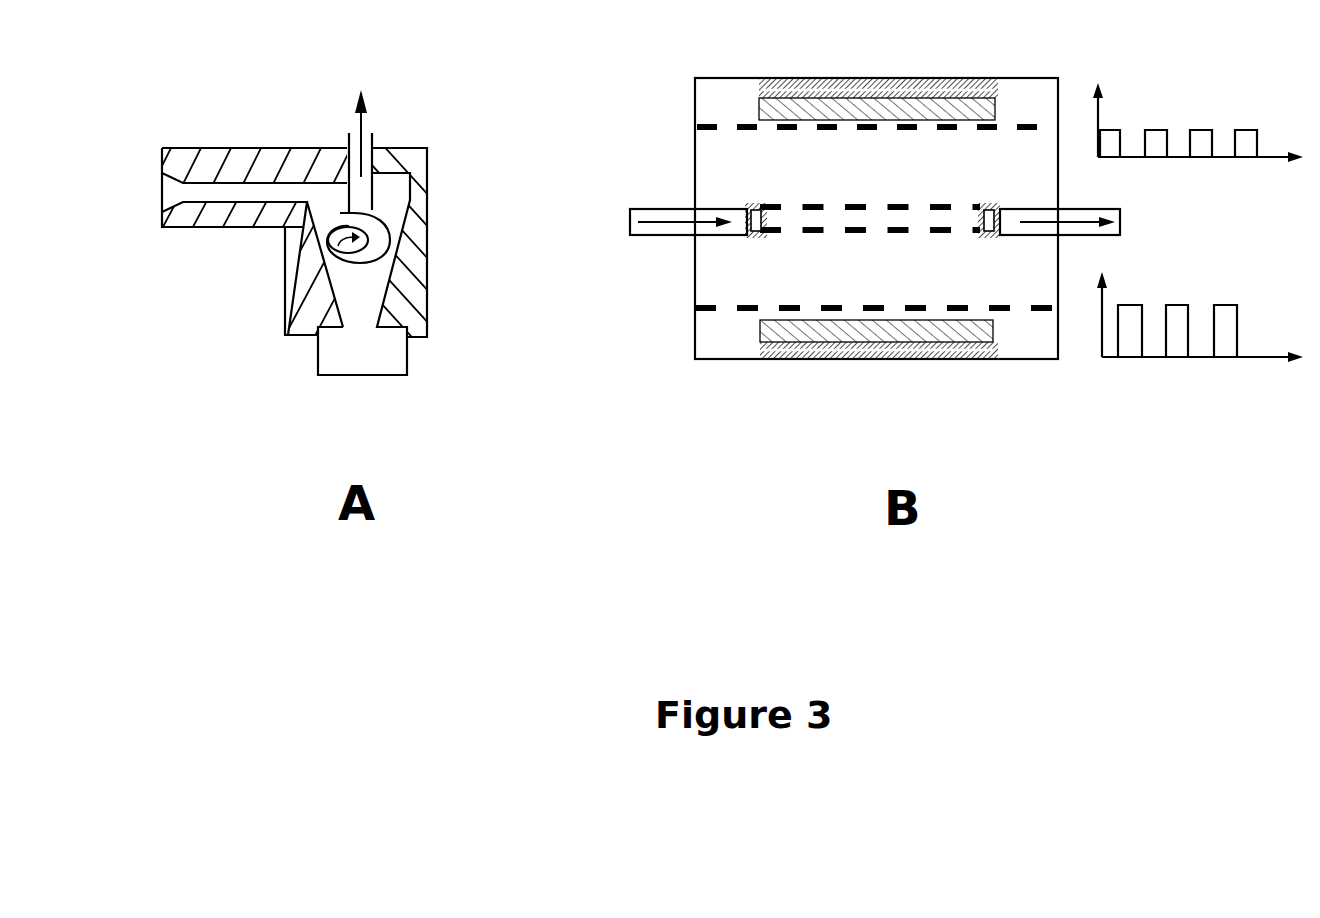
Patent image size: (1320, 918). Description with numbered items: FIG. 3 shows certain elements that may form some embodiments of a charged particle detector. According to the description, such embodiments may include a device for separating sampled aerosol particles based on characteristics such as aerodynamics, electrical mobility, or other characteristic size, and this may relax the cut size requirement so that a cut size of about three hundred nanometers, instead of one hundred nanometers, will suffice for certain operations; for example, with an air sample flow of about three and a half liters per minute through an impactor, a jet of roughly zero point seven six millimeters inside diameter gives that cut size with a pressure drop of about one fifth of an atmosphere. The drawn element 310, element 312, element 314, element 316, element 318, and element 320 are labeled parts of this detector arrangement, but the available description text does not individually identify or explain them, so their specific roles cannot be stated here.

The inlet gas flow 310 is at (222, 192).
The outlet flow 312 is at (357, 143).
The particle collection outlet 314 is at (370, 352).
The electrode 316 is at (920, 105).
The electrode field plane 318 is at (705, 127).
The charged particle channel 320 is at (778, 207).